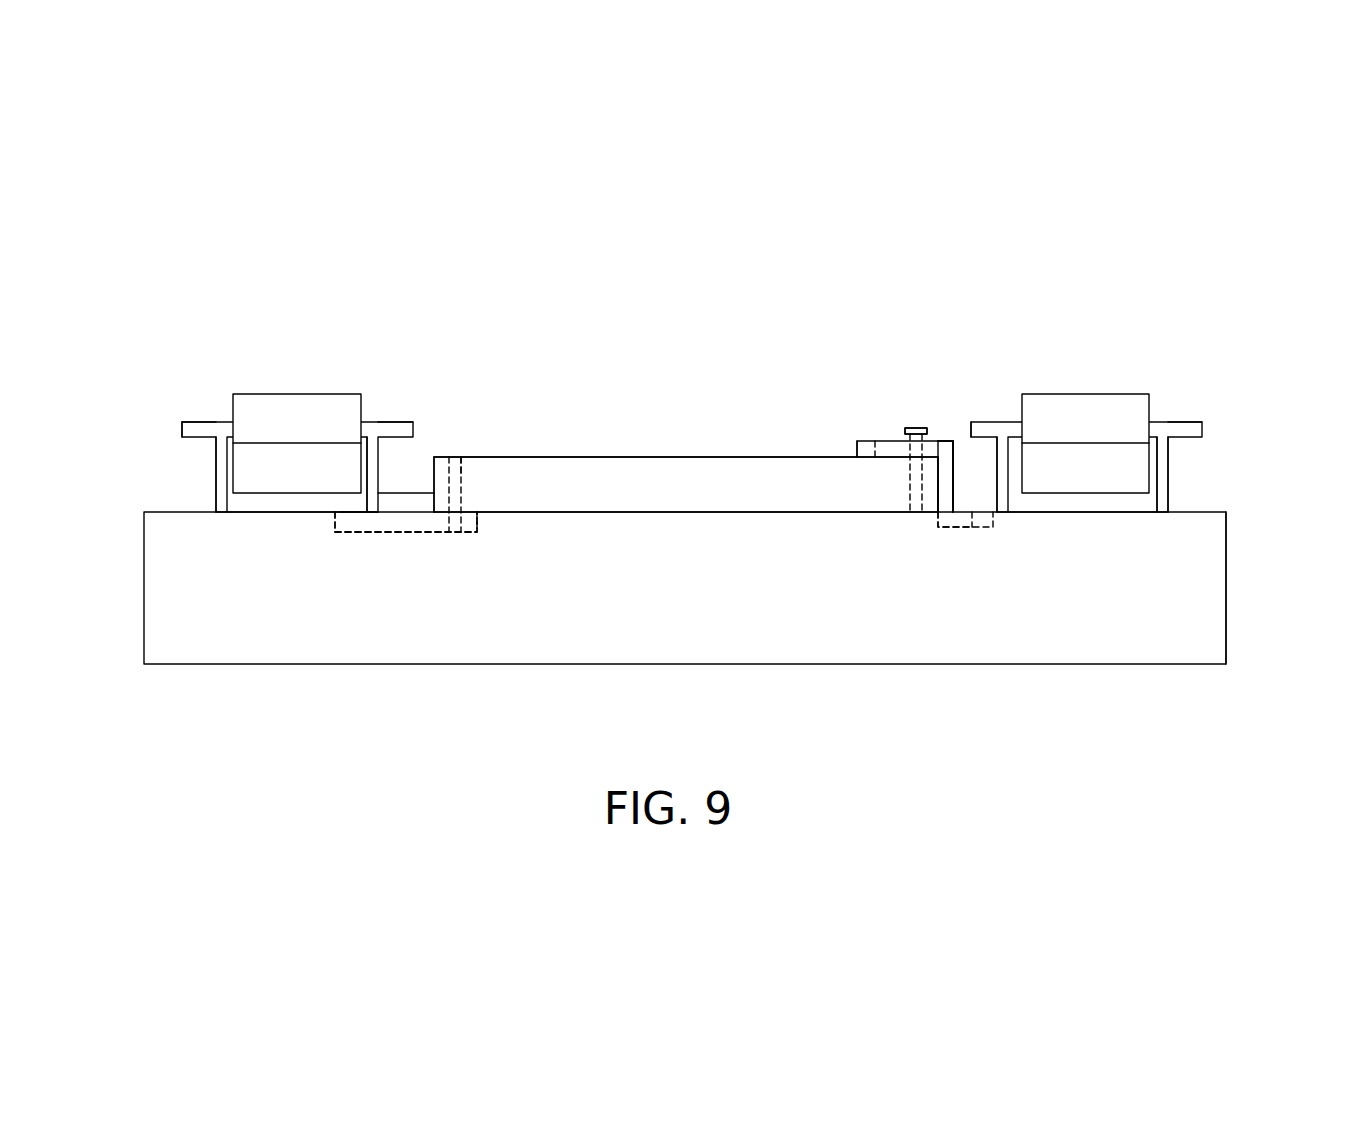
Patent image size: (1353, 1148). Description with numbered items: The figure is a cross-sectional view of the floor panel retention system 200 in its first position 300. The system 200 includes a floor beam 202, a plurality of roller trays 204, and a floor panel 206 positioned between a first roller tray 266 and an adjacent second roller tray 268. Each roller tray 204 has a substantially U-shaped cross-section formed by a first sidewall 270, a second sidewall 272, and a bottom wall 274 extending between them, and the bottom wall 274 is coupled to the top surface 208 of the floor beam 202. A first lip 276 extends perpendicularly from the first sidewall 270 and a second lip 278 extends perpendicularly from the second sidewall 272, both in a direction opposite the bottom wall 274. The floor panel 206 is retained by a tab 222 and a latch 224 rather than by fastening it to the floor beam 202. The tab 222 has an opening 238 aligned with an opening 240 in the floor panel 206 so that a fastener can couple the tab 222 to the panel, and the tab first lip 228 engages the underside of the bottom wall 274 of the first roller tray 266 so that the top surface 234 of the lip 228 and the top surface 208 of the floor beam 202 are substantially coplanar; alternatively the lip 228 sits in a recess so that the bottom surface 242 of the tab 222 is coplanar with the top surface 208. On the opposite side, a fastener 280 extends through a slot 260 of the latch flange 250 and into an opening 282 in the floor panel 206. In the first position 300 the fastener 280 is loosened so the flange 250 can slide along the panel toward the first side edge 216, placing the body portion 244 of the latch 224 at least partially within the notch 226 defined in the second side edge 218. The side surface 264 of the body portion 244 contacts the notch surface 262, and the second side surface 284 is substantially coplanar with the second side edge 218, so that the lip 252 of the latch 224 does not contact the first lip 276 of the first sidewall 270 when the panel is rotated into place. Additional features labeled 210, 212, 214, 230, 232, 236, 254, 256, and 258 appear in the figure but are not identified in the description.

The floor panel retention system 200 is at (180, 270).
The floor beam 202 is at (636, 606).
The roller trays 204 is at (165, 420).
The floor panel 206 is at (686, 496).
The top surface 208 is at (1222, 511).
The module component 210 is at (275, 428).
The die top surface 212 is at (680, 457).
The die bottom surface 214 is at (695, 513).
The first side edge 216 is at (437, 458).
The second side edge 218 is at (960, 498).
The tab 222 is at (409, 590).
The latch 224 is at (822, 372).
The notch 226 is at (956, 470).
The tab first lip 228 is at (345, 534).
The spacer step 230 is at (410, 493).
The first via 232 is at (443, 535).
The top surface 234 is at (350, 505).
The second via 236 is at (465, 511).
The opening 238 is at (475, 535).
The opening 240 is at (462, 473).
The bottom surface 242 is at (407, 535).
The body portion 244 is at (937, 497).
The latch flange 250 is at (857, 443).
The lip 252 is at (943, 530).
The pad portion 254 is at (956, 497).
The dielectric layer 256 is at (883, 457).
The layer end 258 is at (867, 437).
The slot 260 is at (902, 435).
The notch surface 262 is at (945, 496).
The side surface 264 is at (938, 447).
The first roller tray 266 is at (197, 418).
The second roller tray 268 is at (1183, 444).
The first sidewall 270 is at (216, 470).
The second sidewall 272 is at (370, 460).
The bottom wall 274 is at (262, 497).
The first lip 276 is at (182, 428).
The second lip 278 is at (388, 424).
The fastener 280 is at (917, 428).
The opening 282 is at (912, 490).
The second side surface 284 is at (957, 480).
The first position 300 is at (962, 590).